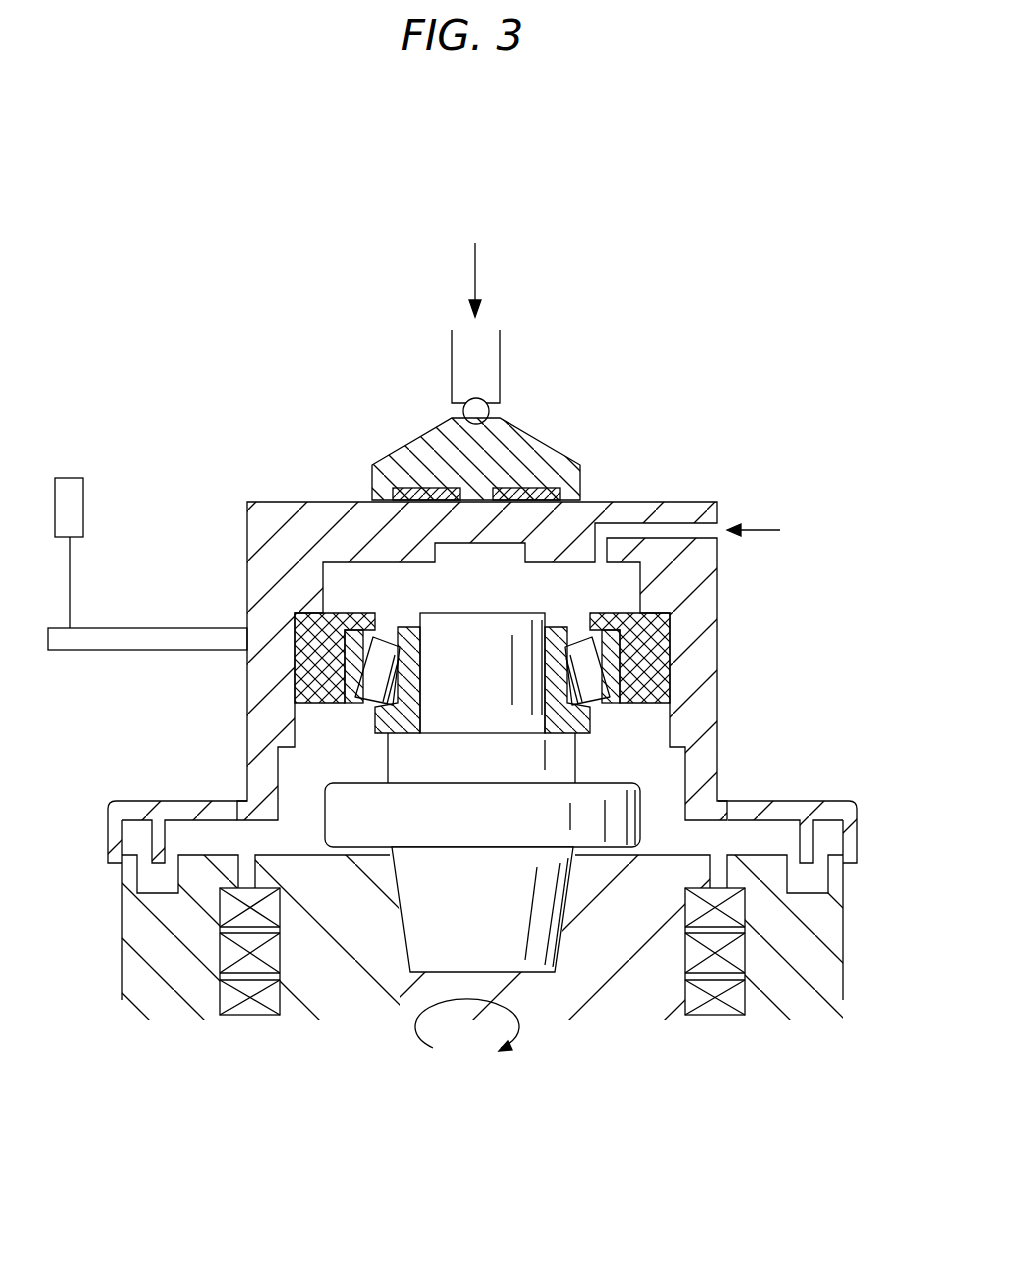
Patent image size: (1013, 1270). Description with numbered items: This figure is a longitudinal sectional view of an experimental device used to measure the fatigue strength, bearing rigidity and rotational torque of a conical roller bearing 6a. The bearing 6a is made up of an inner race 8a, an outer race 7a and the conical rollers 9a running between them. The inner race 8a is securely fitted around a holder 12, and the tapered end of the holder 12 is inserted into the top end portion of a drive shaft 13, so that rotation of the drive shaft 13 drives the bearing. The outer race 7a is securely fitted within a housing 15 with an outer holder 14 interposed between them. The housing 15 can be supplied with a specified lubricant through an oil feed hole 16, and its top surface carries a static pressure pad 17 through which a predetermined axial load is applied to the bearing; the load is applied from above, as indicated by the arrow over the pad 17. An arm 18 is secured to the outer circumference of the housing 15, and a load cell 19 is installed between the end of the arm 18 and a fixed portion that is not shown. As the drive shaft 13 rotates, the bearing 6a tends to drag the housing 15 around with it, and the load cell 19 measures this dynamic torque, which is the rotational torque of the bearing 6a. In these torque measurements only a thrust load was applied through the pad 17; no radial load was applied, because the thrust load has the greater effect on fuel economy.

The conical roller bearing 6a is at (482, 657).
The outer race 7a is at (612, 628).
The inner race 8a is at (582, 704).
The conical rollers 9a is at (373, 684).
The holder 12 is at (342, 820).
The drive shaft 13 is at (665, 878).
The outer holder 14 is at (312, 623).
The housing 15 is at (620, 501).
The oil feed hole 16 is at (672, 532).
The static pressure pad 17 is at (553, 454).
The arm 18 is at (158, 637).
The load cell 19 is at (84, 505).